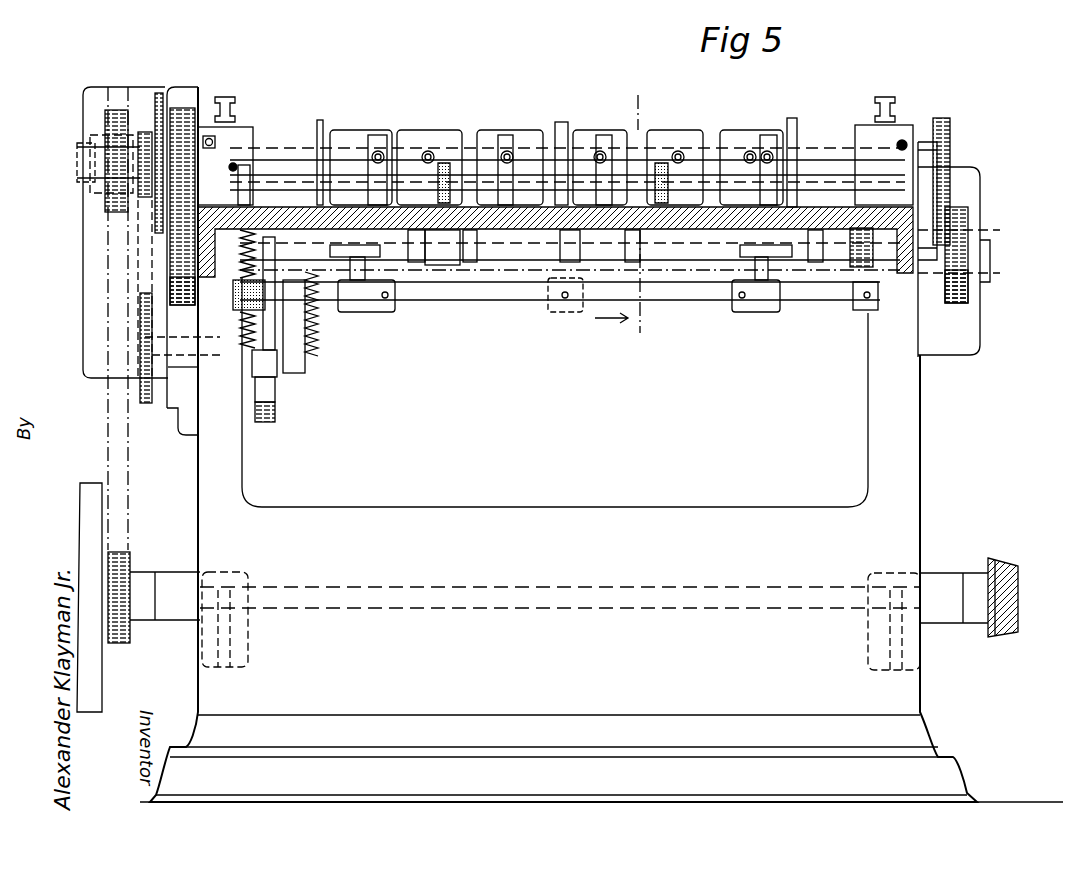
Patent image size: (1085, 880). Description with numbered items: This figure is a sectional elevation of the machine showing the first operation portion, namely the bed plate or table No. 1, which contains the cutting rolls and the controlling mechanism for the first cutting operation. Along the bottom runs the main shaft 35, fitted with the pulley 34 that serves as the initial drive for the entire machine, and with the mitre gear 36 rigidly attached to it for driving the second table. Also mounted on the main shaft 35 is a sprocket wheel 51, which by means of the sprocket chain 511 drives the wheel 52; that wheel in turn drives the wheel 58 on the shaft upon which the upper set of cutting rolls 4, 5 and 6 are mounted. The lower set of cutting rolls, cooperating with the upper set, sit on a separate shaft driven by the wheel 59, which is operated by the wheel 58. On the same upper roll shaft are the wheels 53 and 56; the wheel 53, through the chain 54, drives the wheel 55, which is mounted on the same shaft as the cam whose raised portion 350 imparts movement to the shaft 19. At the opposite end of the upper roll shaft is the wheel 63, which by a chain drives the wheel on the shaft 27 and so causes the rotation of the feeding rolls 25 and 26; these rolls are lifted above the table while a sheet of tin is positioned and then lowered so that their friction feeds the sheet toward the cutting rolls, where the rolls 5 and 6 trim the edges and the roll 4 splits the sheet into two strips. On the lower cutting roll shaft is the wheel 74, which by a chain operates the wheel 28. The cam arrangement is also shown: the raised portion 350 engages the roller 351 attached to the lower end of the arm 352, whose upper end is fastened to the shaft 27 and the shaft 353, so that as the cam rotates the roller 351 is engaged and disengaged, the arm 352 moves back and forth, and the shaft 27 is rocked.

The table No. 1 is at (718, 218).
The cutting roll 4 is at (561, 122).
The cutting roll 5 is at (320, 122).
The cutting roll 6 is at (797, 115).
The shaft 19 is at (485, 298).
The feeding roll 25 is at (440, 165).
The feeding roll 26 is at (662, 165).
The shaft 27 is at (290, 185).
The wheel 28 is at (968, 300).
The pulley 34 is at (86, 483).
The main shaft 35 is at (572, 585).
The mitre gear 36 is at (992, 560).
The sprocket wheel 51 is at (128, 553).
The wheel 52 is at (113, 110).
The wheel 53 is at (145, 130).
The chain 54 is at (145, 262).
The wheel 55 is at (150, 405).
The wheel 56 is at (160, 100).
The wheel 58 is at (183, 108).
The wheel 59 is at (195, 300).
The wheel 63 is at (947, 118).
The wheel 74 is at (965, 222).
The raised portion of cam 350 is at (277, 415).
The roller 351 is at (277, 383).
The arm 352 is at (278, 365).
The shaft 353 is at (320, 312).
The sprocket chain 511 is at (125, 462).